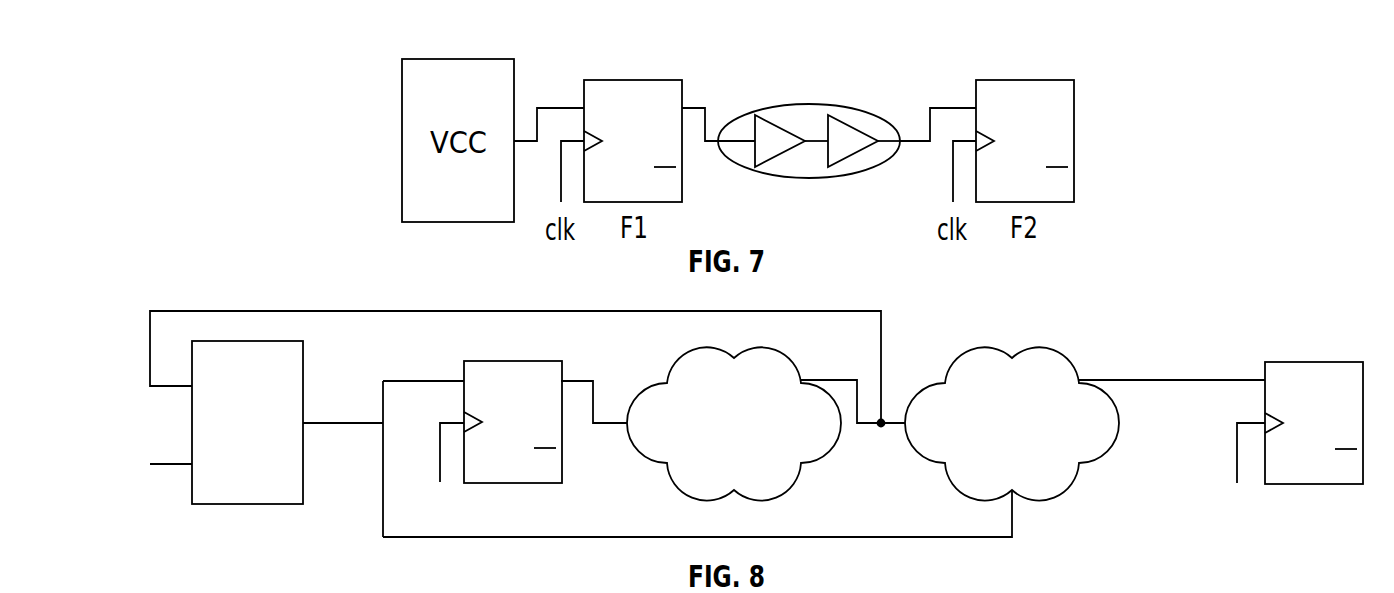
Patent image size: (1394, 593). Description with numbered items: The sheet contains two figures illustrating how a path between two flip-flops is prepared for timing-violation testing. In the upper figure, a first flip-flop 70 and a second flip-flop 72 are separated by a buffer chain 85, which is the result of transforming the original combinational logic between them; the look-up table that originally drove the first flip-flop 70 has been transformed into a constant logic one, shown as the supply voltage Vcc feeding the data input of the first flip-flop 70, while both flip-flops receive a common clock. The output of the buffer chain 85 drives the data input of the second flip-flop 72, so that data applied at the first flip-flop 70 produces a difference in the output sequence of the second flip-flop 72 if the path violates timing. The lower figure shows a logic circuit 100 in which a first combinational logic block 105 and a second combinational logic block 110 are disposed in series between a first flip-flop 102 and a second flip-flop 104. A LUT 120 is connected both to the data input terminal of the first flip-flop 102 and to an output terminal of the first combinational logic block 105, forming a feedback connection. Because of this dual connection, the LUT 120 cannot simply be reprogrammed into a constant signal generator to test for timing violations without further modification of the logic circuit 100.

In FIG. 7, the first flip-flop 70 is at (635, 80).
In FIG. 7, the second flip-flop 72 is at (1025, 80).
In FIG. 7, the buffer chain 85 is at (810, 105).
In FIG. 8, the logic circuit 100 is at (1305, 301).
In FIG. 8, the first flip-flop 102 is at (512, 483).
In FIG. 8, the second flip-flop 104 is at (1313, 484).
In FIG. 8, the first combinational logic block 105 is at (780, 346).
In FIG. 8, the second combinational logic block 110 is at (1058, 346).
In FIG. 8, the LUT 120 is at (247, 505).